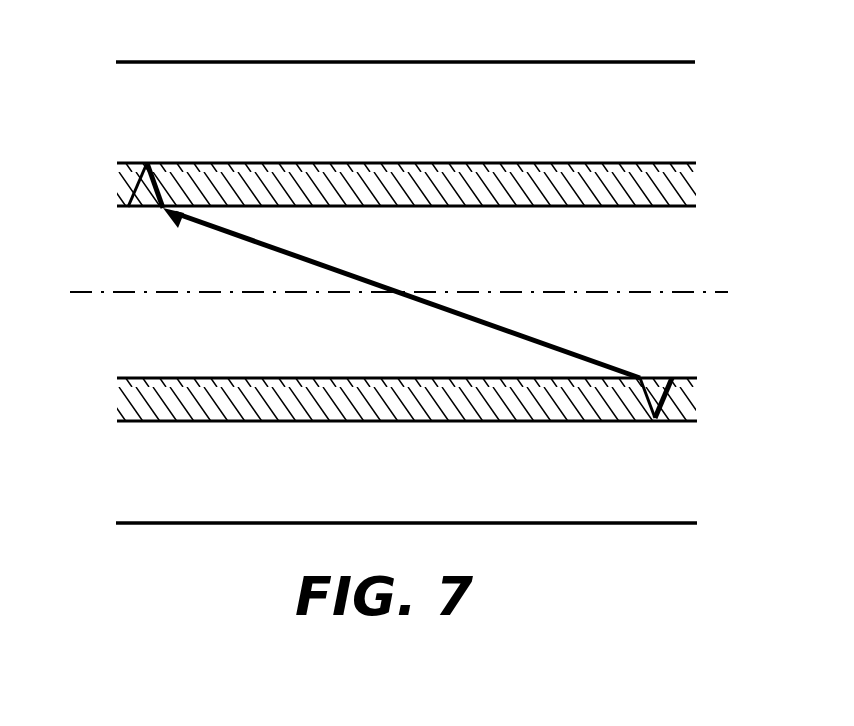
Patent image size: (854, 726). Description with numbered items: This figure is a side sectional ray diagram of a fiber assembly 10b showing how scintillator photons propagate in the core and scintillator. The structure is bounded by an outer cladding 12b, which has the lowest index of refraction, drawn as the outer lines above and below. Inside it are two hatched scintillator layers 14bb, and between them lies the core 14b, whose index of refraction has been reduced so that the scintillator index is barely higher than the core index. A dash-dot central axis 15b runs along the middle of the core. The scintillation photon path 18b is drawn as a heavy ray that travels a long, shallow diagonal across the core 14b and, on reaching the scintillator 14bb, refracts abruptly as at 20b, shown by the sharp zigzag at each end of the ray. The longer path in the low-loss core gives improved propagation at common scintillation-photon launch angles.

The optical waveguide device 10b is at (118, 27).
The outer cladding wall 12b is at (627, 78).
The core 14b is at (602, 260).
The scintillator 14bb is at (447, 182).
The central axis 15b is at (108, 292).
The scintillation photon path 18b is at (308, 255).
The abrupt refraction 20b is at (143, 193).